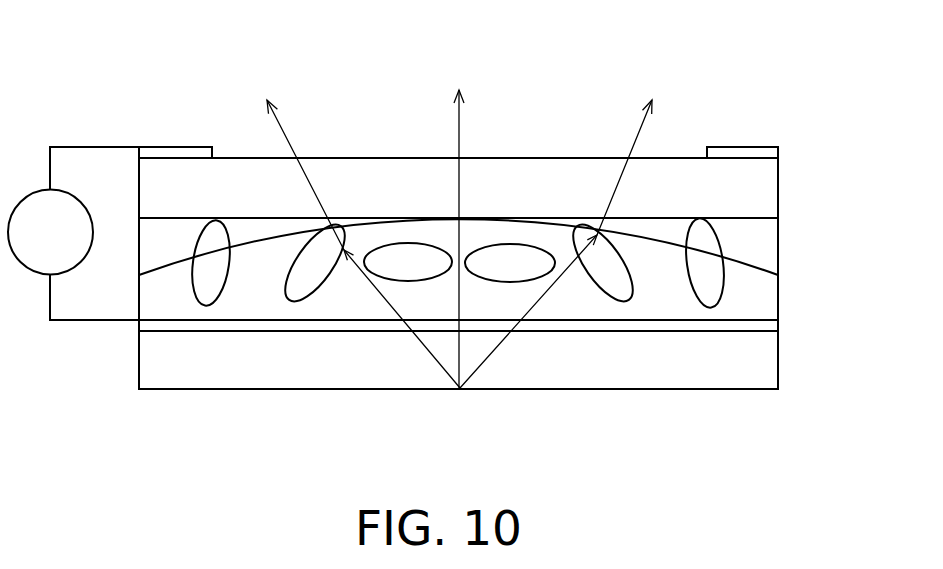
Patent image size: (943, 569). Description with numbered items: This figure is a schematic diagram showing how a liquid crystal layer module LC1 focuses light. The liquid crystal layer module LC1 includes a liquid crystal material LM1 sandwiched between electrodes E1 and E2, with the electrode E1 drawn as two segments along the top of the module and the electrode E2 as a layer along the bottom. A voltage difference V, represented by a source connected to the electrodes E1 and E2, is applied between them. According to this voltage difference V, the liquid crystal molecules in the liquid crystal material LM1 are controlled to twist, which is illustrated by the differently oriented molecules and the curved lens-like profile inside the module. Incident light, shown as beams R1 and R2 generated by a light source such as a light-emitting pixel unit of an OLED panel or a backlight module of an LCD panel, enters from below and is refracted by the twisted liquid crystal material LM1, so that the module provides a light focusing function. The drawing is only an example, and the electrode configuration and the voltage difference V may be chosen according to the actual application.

The liquid crystal layer module LC1 is at (712, 60).
The electrode E1 is at (175, 147).
The electrode E2 is at (768, 323).
The liquid crystal material LM1 is at (725, 275).
The voltage difference V is at (73, 233).
The beam R1 is at (288, 137).
The beam R2 is at (637, 140).